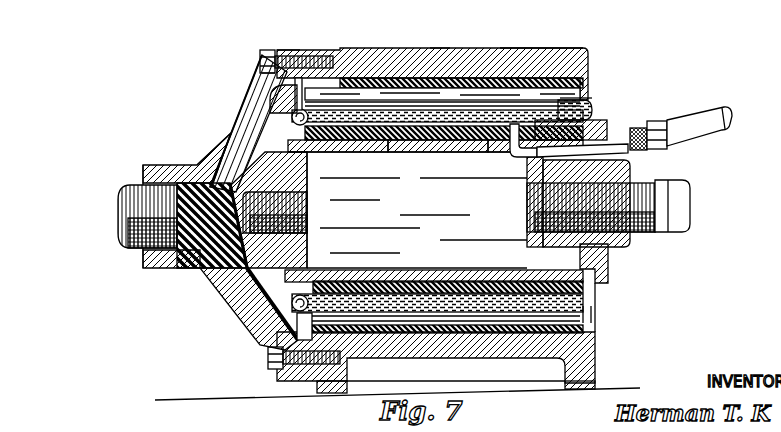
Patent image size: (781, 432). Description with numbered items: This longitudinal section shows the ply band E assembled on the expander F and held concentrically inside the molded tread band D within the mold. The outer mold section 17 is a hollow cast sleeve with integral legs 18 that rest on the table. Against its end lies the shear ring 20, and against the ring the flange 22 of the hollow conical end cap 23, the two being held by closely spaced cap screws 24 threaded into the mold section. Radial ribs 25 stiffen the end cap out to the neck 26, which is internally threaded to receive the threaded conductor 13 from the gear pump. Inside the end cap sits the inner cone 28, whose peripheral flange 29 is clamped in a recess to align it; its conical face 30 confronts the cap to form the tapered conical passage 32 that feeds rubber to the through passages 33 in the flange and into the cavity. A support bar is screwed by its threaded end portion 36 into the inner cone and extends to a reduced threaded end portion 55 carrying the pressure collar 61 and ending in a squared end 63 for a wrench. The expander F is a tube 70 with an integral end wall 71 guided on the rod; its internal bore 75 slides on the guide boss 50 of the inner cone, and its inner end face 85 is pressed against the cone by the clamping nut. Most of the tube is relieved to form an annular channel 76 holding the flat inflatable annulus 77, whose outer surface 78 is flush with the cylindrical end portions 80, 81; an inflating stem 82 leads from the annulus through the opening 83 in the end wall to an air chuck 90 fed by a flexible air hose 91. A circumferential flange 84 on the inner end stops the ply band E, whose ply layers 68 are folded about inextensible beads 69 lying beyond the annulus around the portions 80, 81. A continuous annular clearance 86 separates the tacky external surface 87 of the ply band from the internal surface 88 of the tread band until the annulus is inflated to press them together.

The threaded conductor 13 is at (137, 248).
The outer mold section 17 is at (447, 52).
The integral legs 18 is at (327, 389).
The shear ring 20 is at (307, 48).
The flange of feed member 22 is at (280, 47).
The conical end cap 23 is at (200, 153).
The cap screws 24 is at (262, 56).
The radial ribs 25 is at (222, 128).
The neck portion 26 is at (160, 266).
The inner cone 28 is at (217, 289).
The flange of inner cone 29 is at (266, 348).
The conical face of inner cone 30 is at (213, 157).
The conical passage 32 is at (265, 133).
The through passages 33 is at (262, 83).
The threaded end portion of support bar 36 is at (300, 200).
The guide boss 50 is at (312, 271).
The threaded end portion of rod 55 is at (643, 173).
The pressure collar 61 is at (527, 241).
The squared end 63 is at (690, 208).
The ply material layers 68 is at (490, 83).
The beads 69 is at (593, 110).
The expander tube 70 is at (403, 152).
The end closure wall 71 is at (608, 251).
The internal bore 75 is at (315, 152).
The annular channel 76 is at (360, 152).
The inflatable annulus 77 is at (443, 283).
The outer surface of annulus 78 is at (395, 290).
The cylindrical end portion of expander 80 is at (280, 143).
The cylindrical end portion of expander 81 is at (608, 130).
The inflating stem 82 is at (623, 150).
The opening in expander end wall 83 is at (600, 137).
The circumferential flange 84 is at (295, 322).
The inner end face of expander 85 is at (298, 120).
The annular clearance 86 is at (383, 108).
The external surface of ply band 87 is at (524, 80).
The internal surface of tread band 88 is at (415, 97).
The air chuck 90 is at (653, 120).
The air hose 91 is at (727, 125).
The tread band D is at (438, 50).
The ply band E is at (590, 107).
The expander F is at (610, 283).